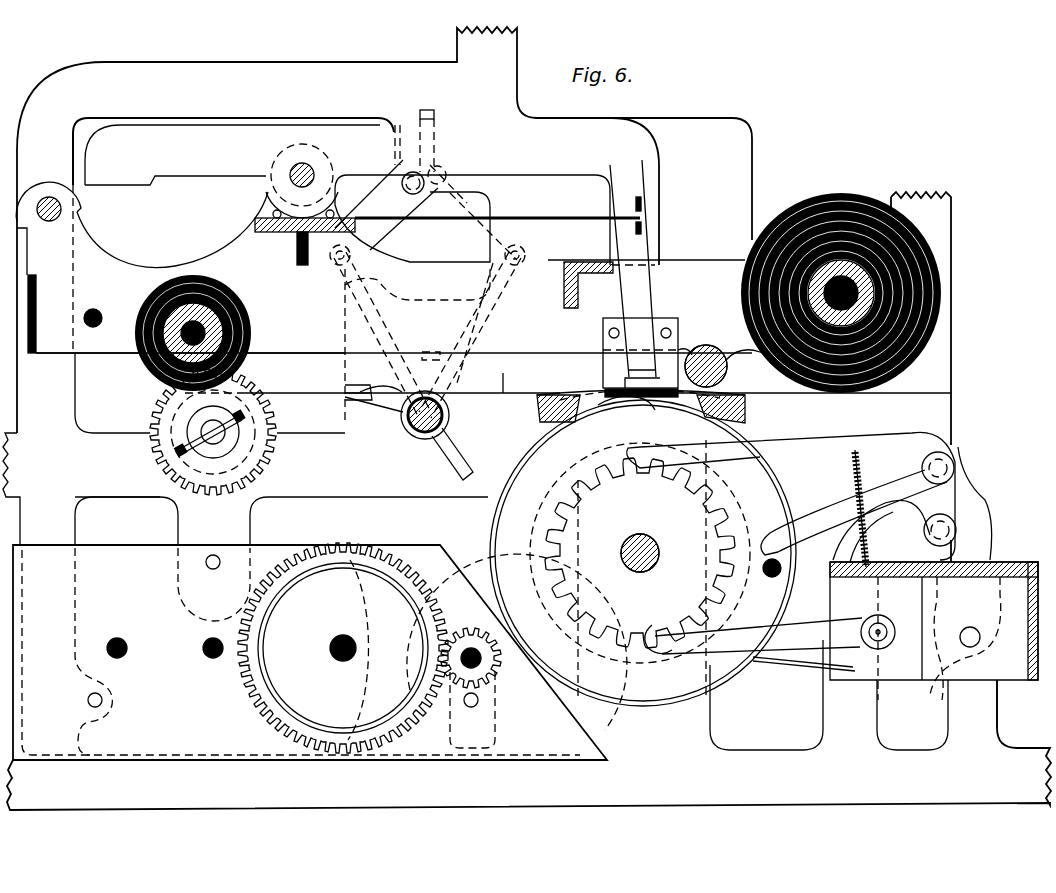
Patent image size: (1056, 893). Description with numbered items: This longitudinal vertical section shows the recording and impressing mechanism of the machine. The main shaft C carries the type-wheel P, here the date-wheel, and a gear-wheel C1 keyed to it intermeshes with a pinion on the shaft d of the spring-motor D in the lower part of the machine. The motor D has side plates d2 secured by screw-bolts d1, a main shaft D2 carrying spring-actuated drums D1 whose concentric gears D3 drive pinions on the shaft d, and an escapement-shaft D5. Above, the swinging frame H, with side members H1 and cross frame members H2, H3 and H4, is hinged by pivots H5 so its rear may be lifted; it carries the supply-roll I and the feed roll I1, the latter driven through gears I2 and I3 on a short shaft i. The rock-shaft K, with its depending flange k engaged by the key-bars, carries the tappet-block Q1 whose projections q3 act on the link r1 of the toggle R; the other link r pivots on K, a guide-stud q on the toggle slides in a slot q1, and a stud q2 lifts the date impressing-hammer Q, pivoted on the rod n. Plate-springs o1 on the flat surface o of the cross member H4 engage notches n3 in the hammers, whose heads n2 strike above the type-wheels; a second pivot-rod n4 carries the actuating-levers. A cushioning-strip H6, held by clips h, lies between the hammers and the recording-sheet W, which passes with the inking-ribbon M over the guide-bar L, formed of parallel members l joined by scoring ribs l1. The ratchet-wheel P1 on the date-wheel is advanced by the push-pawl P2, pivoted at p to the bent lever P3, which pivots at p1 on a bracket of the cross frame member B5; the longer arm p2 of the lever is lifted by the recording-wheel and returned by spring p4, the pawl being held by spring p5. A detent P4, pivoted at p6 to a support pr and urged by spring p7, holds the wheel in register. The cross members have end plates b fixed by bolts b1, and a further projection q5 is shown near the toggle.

The swinging frame H is at (165, 265).
The side members H1 is at (190, 326).
The cross frame member H2 is at (37, 293).
The cross frame member H3 is at (566, 304).
The cross frame member H4 is at (295, 235).
The pivots H5 is at (62, 209).
The cushioning-strip H6 is at (710, 352).
The pivot-rod n is at (290, 170).
The impressing-block n2 is at (630, 383).
The notches n3 is at (630, 212).
The pivot-rod n4 is at (84, 318).
The supply-roll I is at (843, 215).
The feed roll I1 is at (160, 305).
The gear I2 is at (185, 350).
The gear I3 is at (240, 390).
The short shaft i is at (200, 430).
The impressing-hammer Q is at (478, 202).
The tappet-block Q1 is at (344, 390).
The guide-stud q is at (448, 180).
The slot q1 is at (434, 115).
The stud q2 is at (402, 178).
The tappet projections q3 is at (362, 383).
The stop q5 is at (438, 352).
The link r is at (386, 205).
The link r1 is at (392, 342).
The toggle R is at (383, 222).
The flat surface o is at (331, 264).
The plate-springs o1 is at (438, 215).
The rock-shaft K is at (402, 428).
The flange k is at (465, 445).
The recording-sheet W is at (492, 377).
The guide-bar L is at (537, 410).
The parallel members l is at (545, 415).
The cross ribs l1 is at (590, 405).
The inking-ribbon M is at (620, 400).
The clips h is at (660, 330).
The type-wheel P is at (643, 553).
The ratchet-wheel P1 is at (640, 570).
The push-pawl P2 is at (760, 465).
The bent lever P3 is at (887, 524).
The detent P4 is at (664, 660).
The main shaft C is at (640, 574).
The pivot p is at (950, 460).
The pivot p1 is at (958, 530).
The longer arm p2 is at (840, 500).
The spring p4 is at (960, 462).
The coiled spring p5 is at (770, 578).
The pivot p6 is at (850, 478).
The spring p7 is at (793, 662).
The pin pr is at (990, 675).
The bracket B5 is at (940, 578).
The end plate portions b is at (965, 638).
The securing-bolts b1 is at (1000, 690).
The spring-motor D is at (226, 622).
The spring-actuated drums D1 is at (343, 648).
The main shaft D2 is at (330, 652).
The concentric gears D3 is at (258, 705).
The escapement-shaft D5 is at (125, 655).
The shaft d is at (490, 665).
The screw-bolts d1 is at (206, 565).
The side frame members d2 is at (115, 545).
The gear-wheel C1 is at (517, 642).